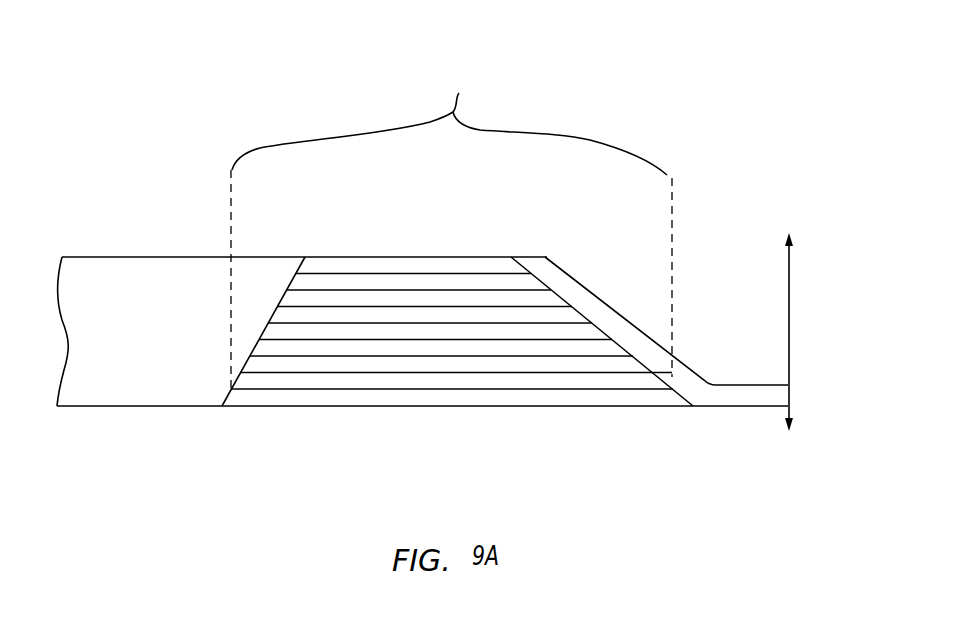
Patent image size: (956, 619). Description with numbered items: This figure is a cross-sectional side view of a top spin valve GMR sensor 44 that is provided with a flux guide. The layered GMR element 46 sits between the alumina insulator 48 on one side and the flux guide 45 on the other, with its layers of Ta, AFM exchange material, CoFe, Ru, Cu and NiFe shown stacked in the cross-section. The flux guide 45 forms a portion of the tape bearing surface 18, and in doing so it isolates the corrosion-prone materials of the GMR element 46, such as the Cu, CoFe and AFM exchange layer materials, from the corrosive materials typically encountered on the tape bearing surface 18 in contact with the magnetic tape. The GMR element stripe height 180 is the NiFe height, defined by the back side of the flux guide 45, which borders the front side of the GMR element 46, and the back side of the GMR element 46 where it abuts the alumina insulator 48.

The GMR element stripe height 180 is at (457, 235).
The top spin valve GMR sensor 44 is at (743, 119).
The alumina insulator 48 is at (220, 257).
The GMR element 46 is at (483, 257).
The flux guide 45 is at (707, 402).
The tape bearing surface 18 is at (793, 336).